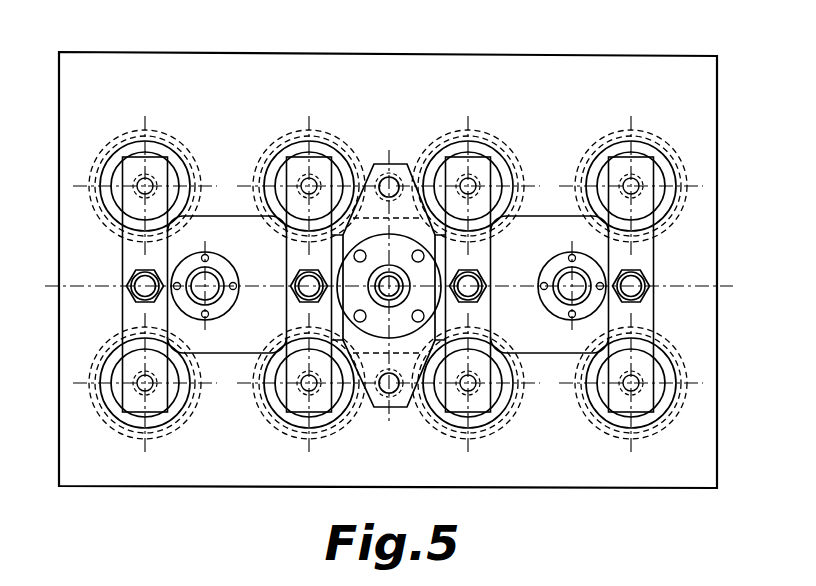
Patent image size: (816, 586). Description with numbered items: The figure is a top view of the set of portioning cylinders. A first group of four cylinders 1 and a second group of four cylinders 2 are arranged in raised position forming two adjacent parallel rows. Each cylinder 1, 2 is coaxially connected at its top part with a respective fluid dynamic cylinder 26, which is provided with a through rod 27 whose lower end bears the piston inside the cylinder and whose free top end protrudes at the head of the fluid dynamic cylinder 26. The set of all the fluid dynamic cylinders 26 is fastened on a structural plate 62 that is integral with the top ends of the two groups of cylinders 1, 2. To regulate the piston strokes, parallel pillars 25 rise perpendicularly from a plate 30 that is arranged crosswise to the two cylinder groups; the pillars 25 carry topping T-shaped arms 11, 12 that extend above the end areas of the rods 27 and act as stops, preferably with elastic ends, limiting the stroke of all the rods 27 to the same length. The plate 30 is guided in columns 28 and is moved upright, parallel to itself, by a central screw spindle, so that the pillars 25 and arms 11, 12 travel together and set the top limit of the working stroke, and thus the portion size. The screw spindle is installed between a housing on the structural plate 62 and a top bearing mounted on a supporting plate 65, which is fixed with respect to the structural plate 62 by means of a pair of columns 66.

The cylinder 1 is at (88, 162).
The cylinder 2 is at (100, 413).
The T-shaped arm 11 is at (110, 193).
The T-shaped arm 12 is at (100, 397).
The pillar 25 is at (123, 280).
The fluid dynamic cylinder 26 is at (300, 143).
The through rod 27 is at (174, 130).
The column 28 is at (207, 268).
The plate 30 is at (233, 343).
The structural plate 62 is at (647, 72).
The supporting plate 65 is at (407, 163).
The column 66 is at (376, 150).